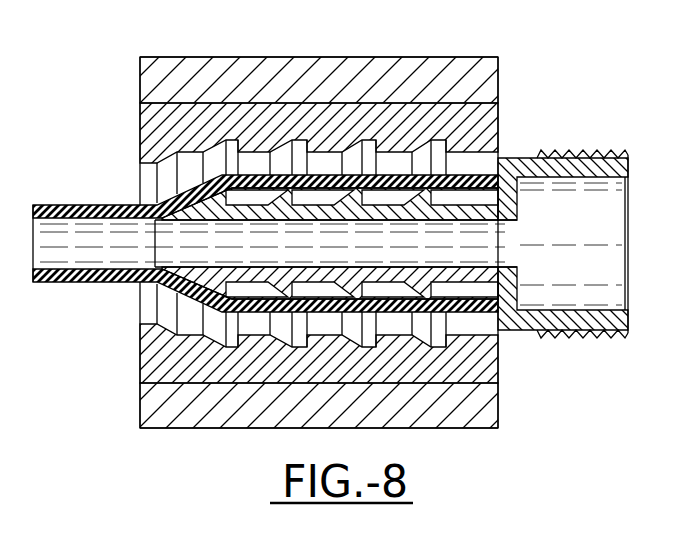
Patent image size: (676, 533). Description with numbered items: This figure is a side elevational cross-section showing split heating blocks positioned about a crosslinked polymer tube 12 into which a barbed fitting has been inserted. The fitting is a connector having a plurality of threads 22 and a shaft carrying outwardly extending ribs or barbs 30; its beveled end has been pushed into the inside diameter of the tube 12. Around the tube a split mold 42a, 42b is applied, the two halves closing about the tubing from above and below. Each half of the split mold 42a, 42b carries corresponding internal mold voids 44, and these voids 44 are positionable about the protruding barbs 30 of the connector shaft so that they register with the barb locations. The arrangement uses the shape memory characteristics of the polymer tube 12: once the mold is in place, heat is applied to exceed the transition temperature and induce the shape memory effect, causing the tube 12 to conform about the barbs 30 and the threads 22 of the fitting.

The polymeric tube 12 is at (77, 283).
The threads 22 is at (596, 150).
The barb 30 is at (434, 283).
The split mold half 42a is at (499, 118).
The split mold half 42b is at (499, 340).
The internal mold voids 44 is at (440, 140).